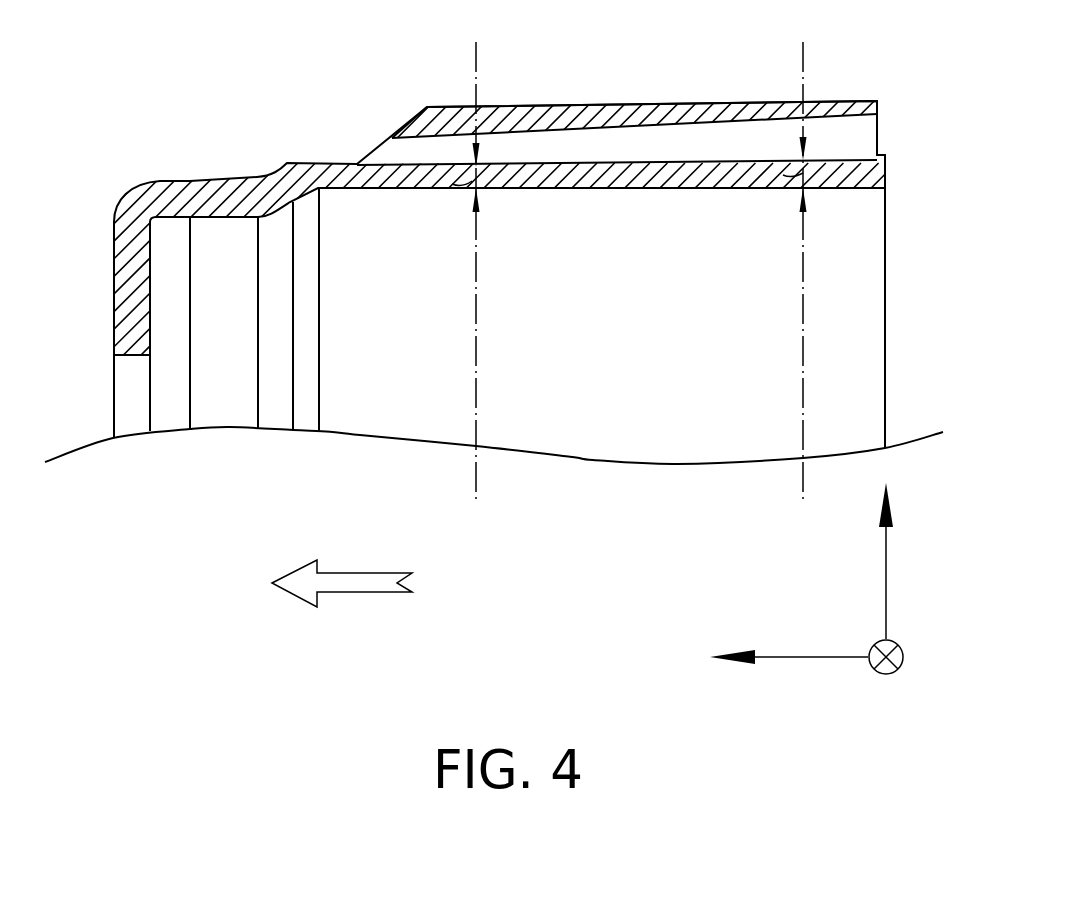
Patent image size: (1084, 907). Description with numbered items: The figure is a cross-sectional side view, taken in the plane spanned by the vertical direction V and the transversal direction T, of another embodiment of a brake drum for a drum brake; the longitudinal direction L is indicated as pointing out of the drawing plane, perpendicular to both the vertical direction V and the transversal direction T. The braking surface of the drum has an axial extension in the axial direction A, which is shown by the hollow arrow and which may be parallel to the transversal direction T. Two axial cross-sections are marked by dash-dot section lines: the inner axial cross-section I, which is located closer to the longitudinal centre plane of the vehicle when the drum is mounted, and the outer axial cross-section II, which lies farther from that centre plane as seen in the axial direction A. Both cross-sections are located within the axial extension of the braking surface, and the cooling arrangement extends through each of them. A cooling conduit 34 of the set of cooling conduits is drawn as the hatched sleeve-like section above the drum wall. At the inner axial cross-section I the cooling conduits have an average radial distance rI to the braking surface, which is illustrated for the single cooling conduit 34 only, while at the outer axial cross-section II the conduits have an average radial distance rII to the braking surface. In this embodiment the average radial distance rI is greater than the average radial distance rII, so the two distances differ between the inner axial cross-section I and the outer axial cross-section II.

The cooling conduit 34 is at (845, 137).
The inner axial cross-section I is at (795, 258).
The outer axial cross-section II is at (463, 258).
The average radial distance of the inner axial cross-section rI is at (786, 176).
The average radial distance of the outer axial cross-section rII is at (456, 185).
The axial direction A is at (342, 562).
The vertical direction V is at (909, 560).
The transversal direction T is at (789, 687).
The longitudinal direction L is at (907, 680).